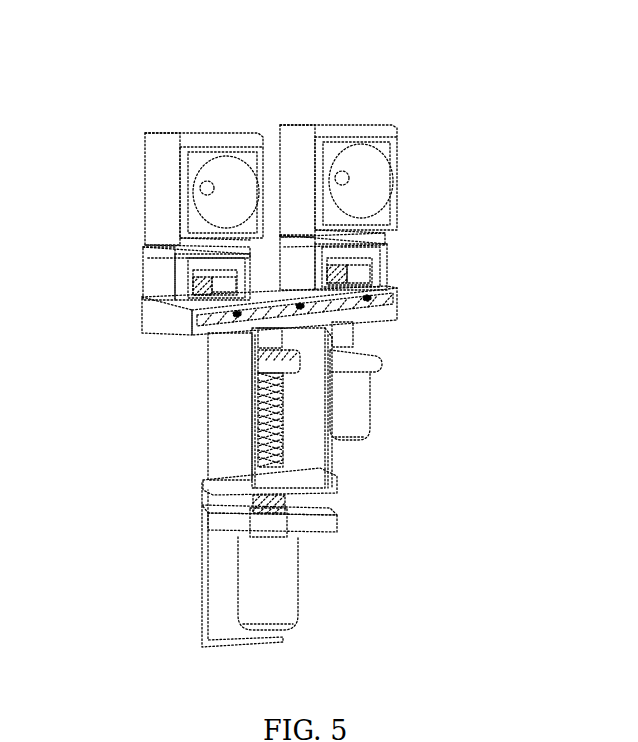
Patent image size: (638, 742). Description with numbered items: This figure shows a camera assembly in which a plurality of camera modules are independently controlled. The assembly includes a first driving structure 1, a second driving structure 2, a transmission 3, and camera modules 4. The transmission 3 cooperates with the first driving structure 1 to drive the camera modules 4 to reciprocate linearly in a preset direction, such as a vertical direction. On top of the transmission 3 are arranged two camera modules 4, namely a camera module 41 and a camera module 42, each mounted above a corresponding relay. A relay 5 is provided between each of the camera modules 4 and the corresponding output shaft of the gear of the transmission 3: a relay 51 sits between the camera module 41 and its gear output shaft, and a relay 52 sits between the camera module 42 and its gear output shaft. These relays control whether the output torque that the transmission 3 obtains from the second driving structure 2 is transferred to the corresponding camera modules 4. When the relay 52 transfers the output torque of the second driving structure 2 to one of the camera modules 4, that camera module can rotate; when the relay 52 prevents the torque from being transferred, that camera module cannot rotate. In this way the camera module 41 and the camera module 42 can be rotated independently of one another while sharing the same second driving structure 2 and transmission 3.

The first driving structure 1 is at (273, 587).
The second driving structure 2 is at (350, 407).
The transmission 3 is at (235, 410).
The camera module 4 is at (267, 33).
The camera module 41 is at (325, 128).
The camera module 42 is at (163, 178).
The relay 5 is at (493, 255).
The relay 51 is at (383, 262).
The relay 52 is at (238, 272).